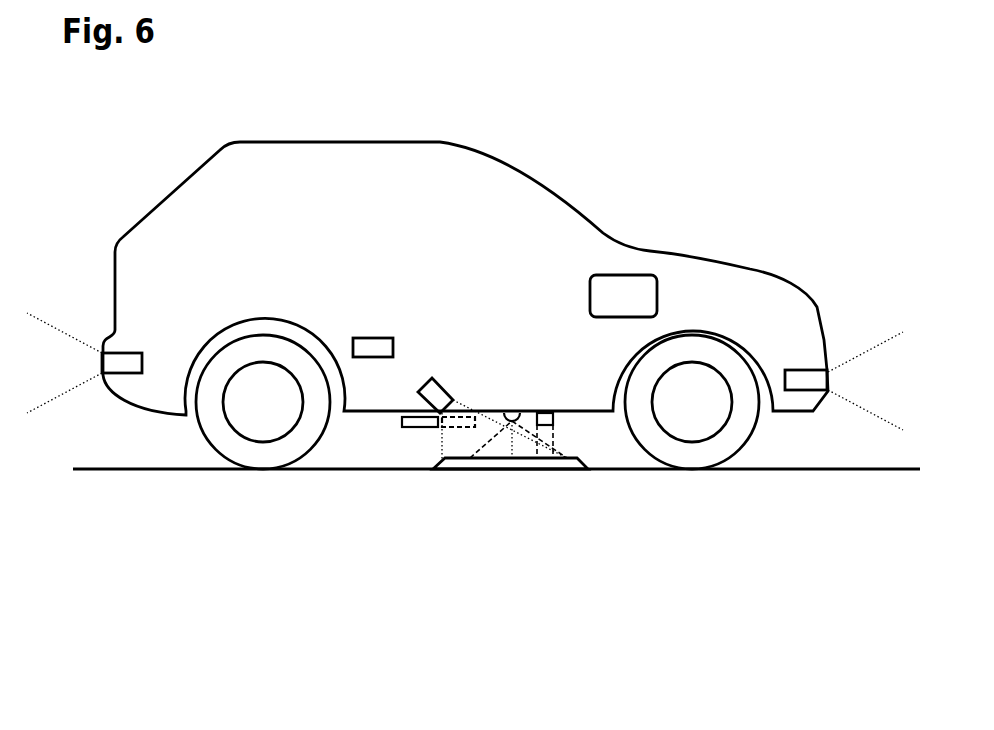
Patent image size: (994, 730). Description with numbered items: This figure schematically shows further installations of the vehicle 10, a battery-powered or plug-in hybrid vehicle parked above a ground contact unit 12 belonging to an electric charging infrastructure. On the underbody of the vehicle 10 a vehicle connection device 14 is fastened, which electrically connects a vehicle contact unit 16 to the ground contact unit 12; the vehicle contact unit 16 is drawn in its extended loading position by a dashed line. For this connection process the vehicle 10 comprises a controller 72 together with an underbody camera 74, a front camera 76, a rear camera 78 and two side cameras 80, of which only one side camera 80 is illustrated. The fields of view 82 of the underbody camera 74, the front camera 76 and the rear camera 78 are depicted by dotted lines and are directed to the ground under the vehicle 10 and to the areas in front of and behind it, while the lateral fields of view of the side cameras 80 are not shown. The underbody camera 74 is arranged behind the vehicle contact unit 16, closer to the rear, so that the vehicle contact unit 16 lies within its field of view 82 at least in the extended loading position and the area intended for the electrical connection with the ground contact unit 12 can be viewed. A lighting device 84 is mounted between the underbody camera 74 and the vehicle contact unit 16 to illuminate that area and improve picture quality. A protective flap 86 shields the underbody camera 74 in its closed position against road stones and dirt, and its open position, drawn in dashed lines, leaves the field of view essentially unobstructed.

The vehicle 10 is at (715, 119).
The ground contact unit 12 is at (525, 469).
The vehicle connection device 14 is at (585, 441).
The vehicle contact unit 16 is at (548, 413).
The controller 72 is at (617, 275).
The underbody camera 74 is at (435, 388).
The front camera 76 is at (808, 382).
The rear camera 78 is at (127, 363).
The side camera 80 is at (371, 338).
The field of view 82 is at (65, 390).
The lighting device 84 is at (510, 413).
The protective flap 86 is at (422, 427).